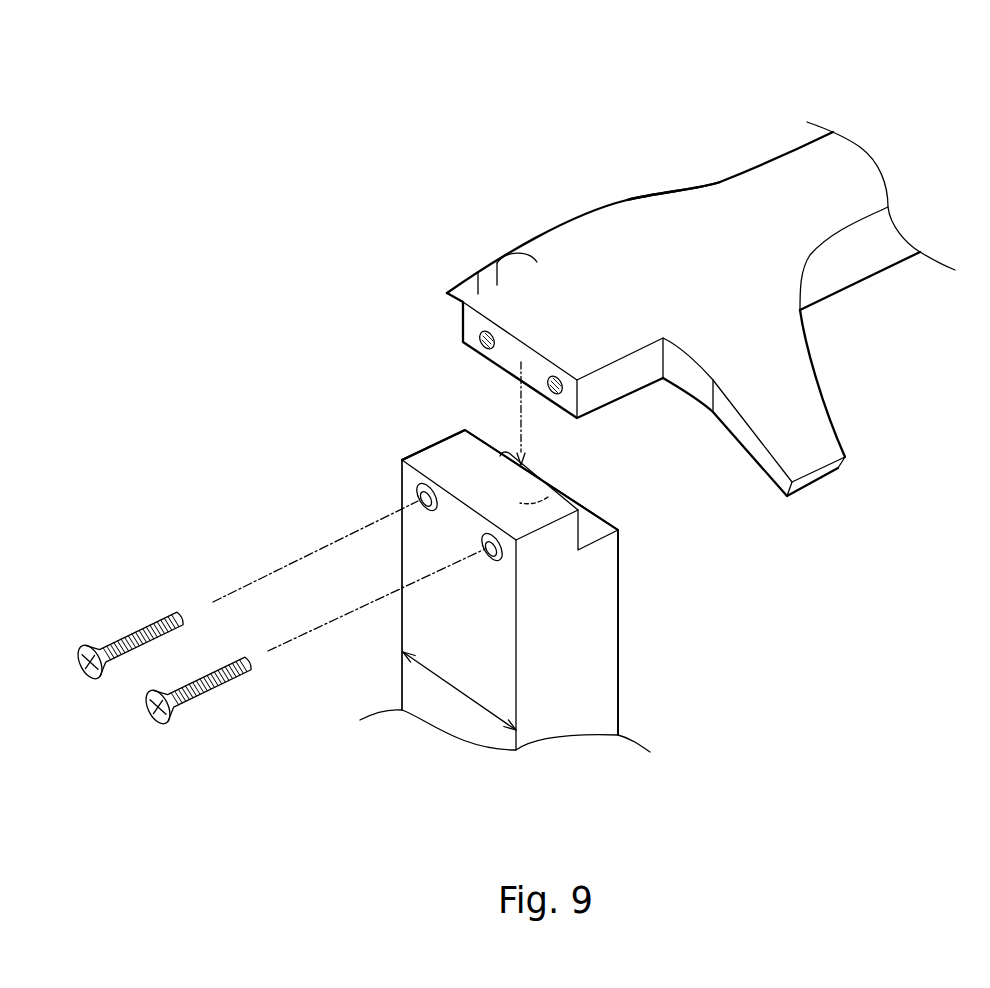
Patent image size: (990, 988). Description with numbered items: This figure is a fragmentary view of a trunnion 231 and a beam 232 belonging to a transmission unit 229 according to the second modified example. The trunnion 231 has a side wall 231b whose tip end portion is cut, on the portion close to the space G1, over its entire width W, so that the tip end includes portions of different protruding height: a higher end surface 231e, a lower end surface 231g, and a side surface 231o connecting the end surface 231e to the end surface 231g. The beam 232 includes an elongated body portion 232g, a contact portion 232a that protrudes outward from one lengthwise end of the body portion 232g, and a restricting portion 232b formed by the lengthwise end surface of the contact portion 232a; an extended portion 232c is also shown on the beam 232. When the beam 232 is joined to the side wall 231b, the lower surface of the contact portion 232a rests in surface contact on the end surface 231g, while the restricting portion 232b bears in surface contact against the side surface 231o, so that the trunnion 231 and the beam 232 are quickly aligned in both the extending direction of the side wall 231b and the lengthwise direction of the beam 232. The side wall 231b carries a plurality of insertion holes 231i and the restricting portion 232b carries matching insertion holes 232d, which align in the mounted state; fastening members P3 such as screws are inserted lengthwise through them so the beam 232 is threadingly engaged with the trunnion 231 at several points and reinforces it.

The beam 232 is at (780, 150).
The body portion 232g is at (685, 215).
The restricting portion 232b is at (518, 358).
The contact portion 232a is at (478, 270).
The insertion holes 232d is at (552, 374).
The extended portion 232c is at (817, 484).
The transmission unit 229 is at (330, 412).
The trunnion 231 is at (397, 670).
The end surface 231e is at (432, 458).
The insertion holes 231i is at (417, 498).
The side surface 231o is at (557, 493).
The end surface 231g is at (620, 528).
The side wall 231b is at (618, 667).
The fastening member P3 is at (87, 643).
The space G1 is at (752, 576).
The width W is at (457, 693).